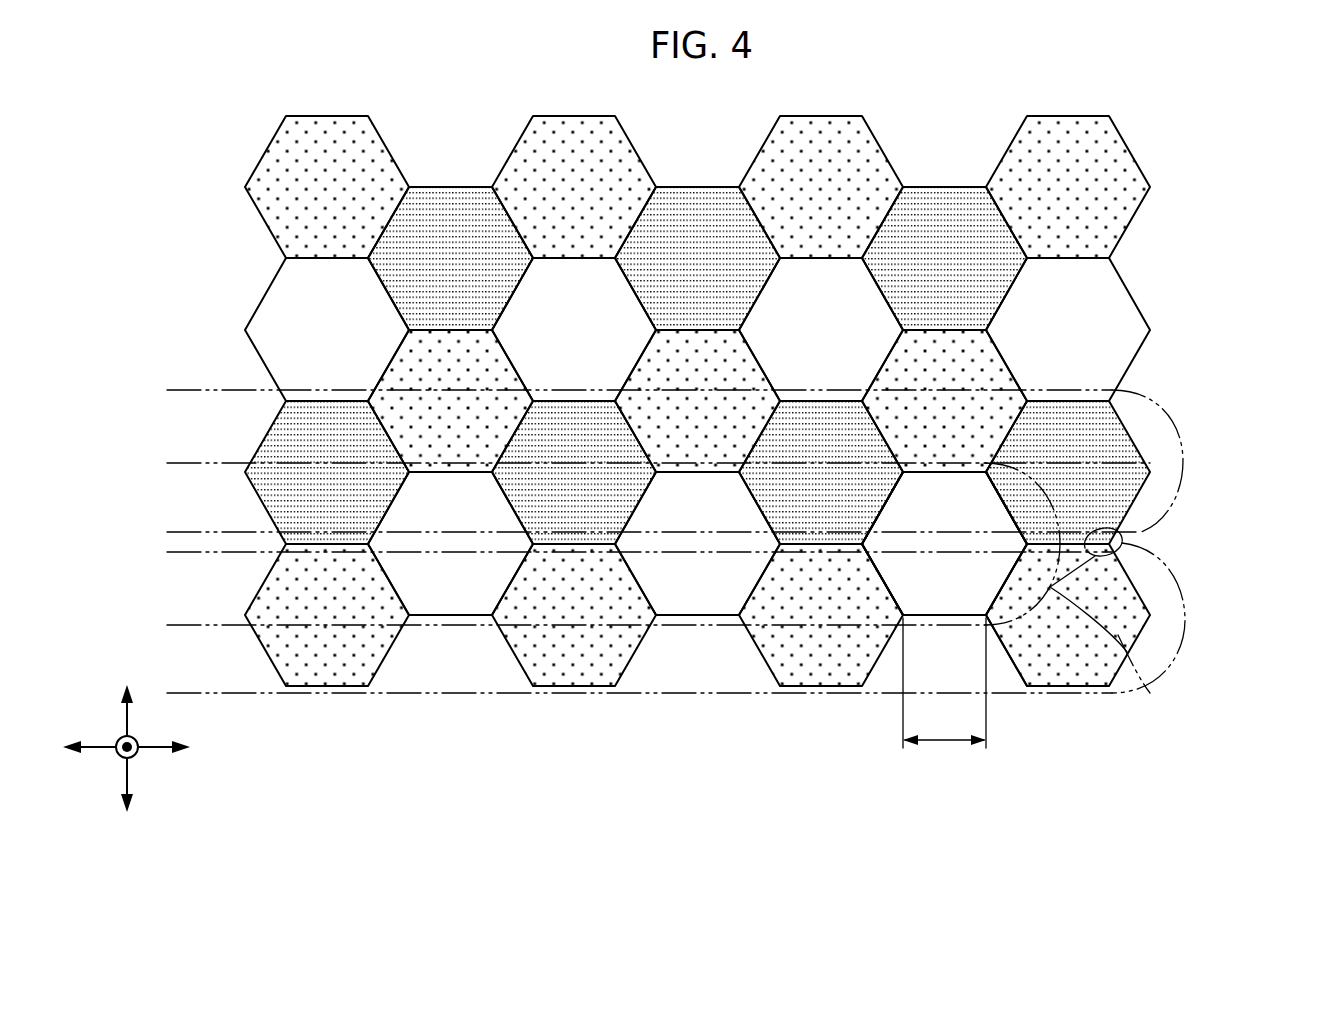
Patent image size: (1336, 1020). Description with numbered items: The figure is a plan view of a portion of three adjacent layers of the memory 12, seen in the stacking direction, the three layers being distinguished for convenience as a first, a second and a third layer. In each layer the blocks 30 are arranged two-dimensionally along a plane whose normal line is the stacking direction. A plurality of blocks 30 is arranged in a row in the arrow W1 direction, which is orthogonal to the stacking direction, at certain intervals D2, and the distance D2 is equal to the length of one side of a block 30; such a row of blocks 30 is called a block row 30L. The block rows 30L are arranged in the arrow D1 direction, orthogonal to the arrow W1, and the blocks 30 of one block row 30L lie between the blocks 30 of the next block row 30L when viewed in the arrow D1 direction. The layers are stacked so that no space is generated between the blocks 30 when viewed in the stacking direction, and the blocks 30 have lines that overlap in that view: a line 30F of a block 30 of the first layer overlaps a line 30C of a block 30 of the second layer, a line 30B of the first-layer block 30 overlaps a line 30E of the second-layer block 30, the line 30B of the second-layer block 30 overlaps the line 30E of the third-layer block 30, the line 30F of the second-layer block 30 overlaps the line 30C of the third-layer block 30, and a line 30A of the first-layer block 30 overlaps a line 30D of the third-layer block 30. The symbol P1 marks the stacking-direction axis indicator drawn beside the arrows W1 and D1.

The memory 12 is at (1124, 75).
The block 30 is at (1137, 210).
The line of the block 30A is at (1093, 540).
The line of the block 30B is at (1010, 512).
The line of the block 30C is at (884, 508).
The line of the block 30D is at (1103, 548).
The line of the block 30E is at (996, 490).
The line of the block 30F is at (895, 487).
The block row 30L is at (1182, 456).
The arrow D1 direction D1 is at (128, 722).
The arrow W1 direction W1 is at (152, 748).
The normal direction point P1 is at (115, 759).
The interval (distance) between blocks D2 is at (944, 683).